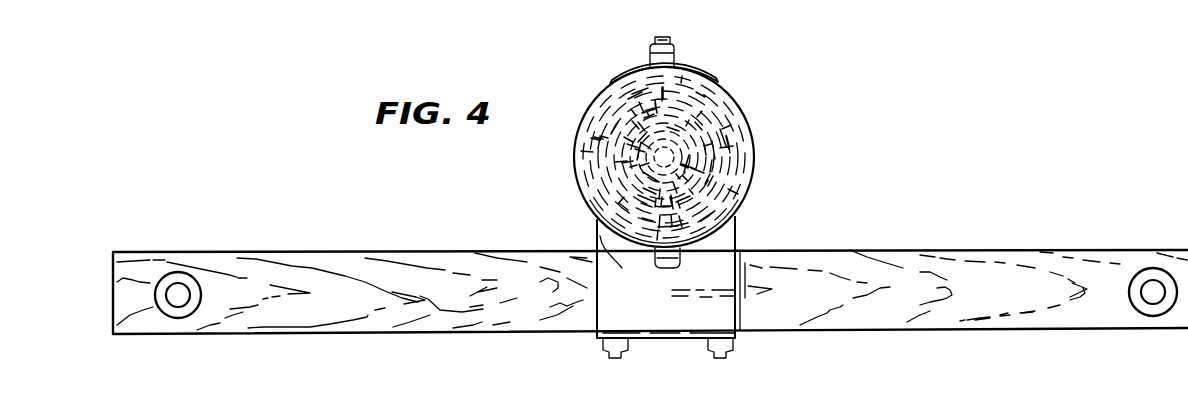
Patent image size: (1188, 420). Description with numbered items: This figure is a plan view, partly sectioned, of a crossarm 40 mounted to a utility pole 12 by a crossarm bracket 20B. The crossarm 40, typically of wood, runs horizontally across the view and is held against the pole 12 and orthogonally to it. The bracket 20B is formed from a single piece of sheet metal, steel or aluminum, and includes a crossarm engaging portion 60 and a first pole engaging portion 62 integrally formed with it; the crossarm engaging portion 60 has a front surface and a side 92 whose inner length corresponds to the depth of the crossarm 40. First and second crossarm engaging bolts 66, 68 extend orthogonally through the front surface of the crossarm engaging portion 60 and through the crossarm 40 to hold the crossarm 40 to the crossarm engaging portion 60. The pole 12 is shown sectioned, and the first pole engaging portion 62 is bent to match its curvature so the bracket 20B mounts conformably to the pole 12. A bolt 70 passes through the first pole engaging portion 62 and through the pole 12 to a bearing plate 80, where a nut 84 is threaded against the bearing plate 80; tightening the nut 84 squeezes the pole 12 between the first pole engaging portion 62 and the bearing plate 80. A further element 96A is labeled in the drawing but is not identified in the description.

The utility pole 12 is at (742, 120).
The crossarm bracket 20B is at (661, 345).
The crossarm 40 is at (958, 262).
The crossarm engaging portion 60 is at (745, 246).
The first pole engaging portion 62 is at (737, 222).
The first crossarm engaging bolt 66 is at (610, 358).
The second crossarm engaging bolt 68 is at (728, 357).
The bolt 70 is at (668, 270).
The bearing plate 80 is at (712, 80).
The nut 84 is at (675, 60).
The side 92 is at (610, 258).
The fastener 96A is at (866, 419).